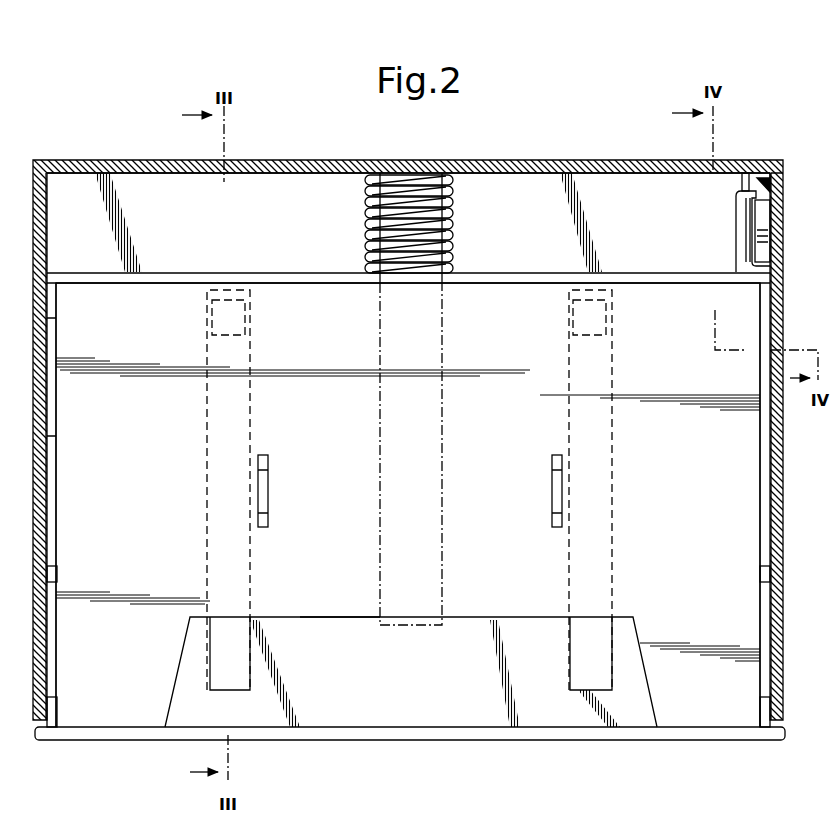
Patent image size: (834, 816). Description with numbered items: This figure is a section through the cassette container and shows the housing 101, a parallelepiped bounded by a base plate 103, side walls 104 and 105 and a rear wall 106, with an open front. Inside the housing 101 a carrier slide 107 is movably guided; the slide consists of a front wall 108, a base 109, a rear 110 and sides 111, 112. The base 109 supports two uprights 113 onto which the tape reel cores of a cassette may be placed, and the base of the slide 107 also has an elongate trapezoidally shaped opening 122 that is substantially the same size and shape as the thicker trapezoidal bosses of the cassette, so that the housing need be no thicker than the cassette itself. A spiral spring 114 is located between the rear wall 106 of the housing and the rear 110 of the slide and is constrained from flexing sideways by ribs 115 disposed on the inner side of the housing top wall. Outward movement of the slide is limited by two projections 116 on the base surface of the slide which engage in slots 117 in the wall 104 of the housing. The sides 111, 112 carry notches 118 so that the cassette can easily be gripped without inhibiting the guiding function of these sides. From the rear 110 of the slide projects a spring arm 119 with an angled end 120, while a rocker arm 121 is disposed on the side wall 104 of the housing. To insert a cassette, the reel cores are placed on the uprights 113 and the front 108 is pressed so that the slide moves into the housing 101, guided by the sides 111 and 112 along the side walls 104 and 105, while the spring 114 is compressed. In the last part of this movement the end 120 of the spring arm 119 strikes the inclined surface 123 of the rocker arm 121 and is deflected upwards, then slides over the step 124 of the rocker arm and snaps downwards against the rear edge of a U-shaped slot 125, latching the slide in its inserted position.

The housing 101 is at (472, 160).
The base plate 103 is at (402, 692).
The side wall 104 is at (784, 498).
The side wall 105 is at (57, 655).
The rear wall 106 is at (136, 161).
The carrier slide 107 is at (240, 272).
The front wall 108 is at (586, 736).
The base wall 109 is at (118, 478).
The rear 110 is at (478, 284).
The side 111 is at (760, 470).
The side 112 is at (57, 415).
The upright 113 is at (262, 492).
The spiral spring 114 is at (452, 216).
The rib 115 is at (379, 433).
The projection 116 is at (248, 318).
The slot 117 is at (256, 660).
The notch 118 is at (54, 575).
The spring arm 119 is at (737, 252).
The angled end 120 is at (745, 172).
The rocker arm 121 is at (746, 228).
The trapezoidally shaped opening 122 is at (362, 620).
The inclined surface 123 is at (771, 252).
The step 124 is at (771, 212).
The U-shaped slot 125 is at (784, 176).